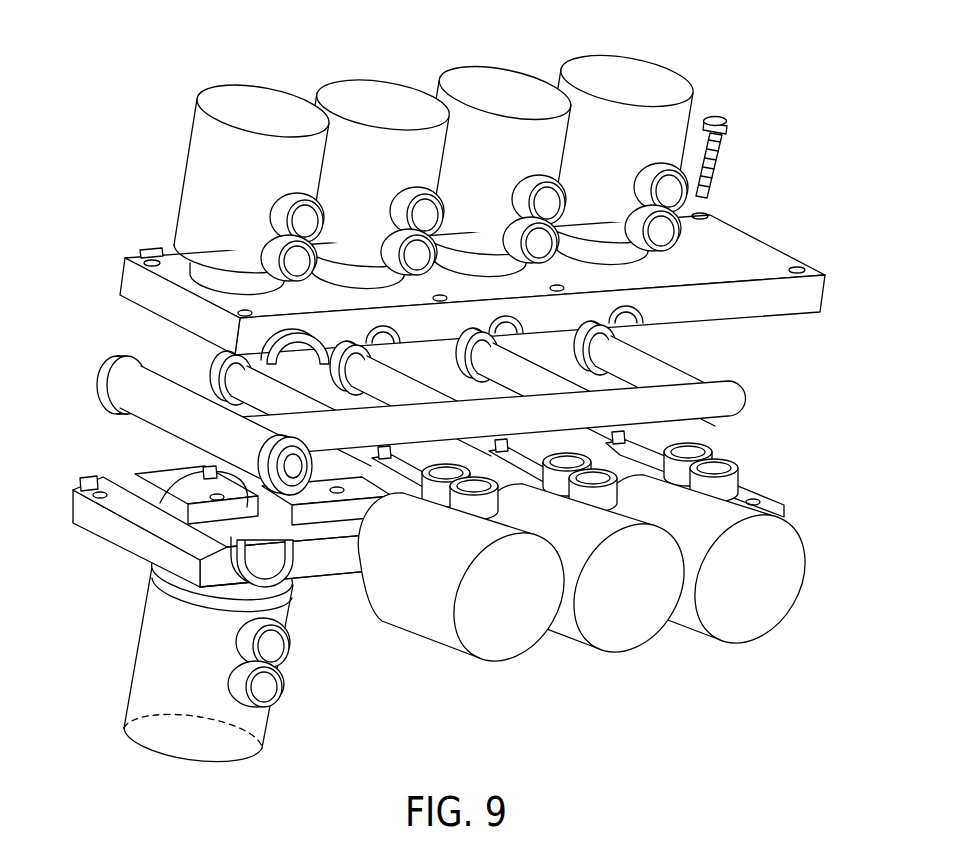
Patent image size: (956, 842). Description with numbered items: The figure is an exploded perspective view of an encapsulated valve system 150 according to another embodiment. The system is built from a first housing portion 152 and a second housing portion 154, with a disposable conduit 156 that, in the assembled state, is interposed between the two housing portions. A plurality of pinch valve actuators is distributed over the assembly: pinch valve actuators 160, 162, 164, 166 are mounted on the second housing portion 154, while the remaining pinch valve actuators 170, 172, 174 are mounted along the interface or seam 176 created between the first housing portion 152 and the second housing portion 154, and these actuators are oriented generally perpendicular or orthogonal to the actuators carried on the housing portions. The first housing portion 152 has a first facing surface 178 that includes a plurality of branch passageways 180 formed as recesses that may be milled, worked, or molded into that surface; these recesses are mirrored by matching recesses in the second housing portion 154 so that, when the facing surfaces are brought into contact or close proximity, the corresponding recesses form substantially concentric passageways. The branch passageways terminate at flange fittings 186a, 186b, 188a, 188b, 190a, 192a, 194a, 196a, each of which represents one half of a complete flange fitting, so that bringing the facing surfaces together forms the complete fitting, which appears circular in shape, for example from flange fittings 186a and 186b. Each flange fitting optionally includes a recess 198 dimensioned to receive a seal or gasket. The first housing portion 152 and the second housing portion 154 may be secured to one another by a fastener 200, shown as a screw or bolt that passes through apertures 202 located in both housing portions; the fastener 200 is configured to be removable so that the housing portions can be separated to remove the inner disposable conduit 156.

The encapsulated valve system 150 is at (792, 156).
The first housing portion 152 is at (100, 530).
The second housing portion 154 is at (124, 280).
The disposable conduit 156 is at (733, 396).
The pinch valve actuator 160 is at (246, 96).
The pinch valve actuator 162 is at (372, 90).
The pinch valve actuator 164 is at (497, 80).
The pinch valve actuator 166 is at (627, 68).
The pinch valve actuator 170 is at (500, 660).
The pinch valve actuator 172 is at (622, 646).
The pinch valve actuator 174 is at (745, 636).
The interface or seam 176 is at (315, 537).
The first facing surface 178 is at (160, 540).
The branch passageways 180 is at (196, 486).
The flange fitting 186a is at (286, 588).
The flange fitting 186b is at (306, 340).
The flange fitting 188a is at (88, 476).
The flange fitting 188b is at (155, 252).
The flange fitting 190a is at (205, 466).
The flange fitting 192a is at (381, 446).
The flange fitting 194a is at (498, 439).
The flange fitting 196a is at (617, 431).
The recess 198 is at (175, 601).
The fastener 200 is at (722, 148).
The apertures 202 is at (797, 266).